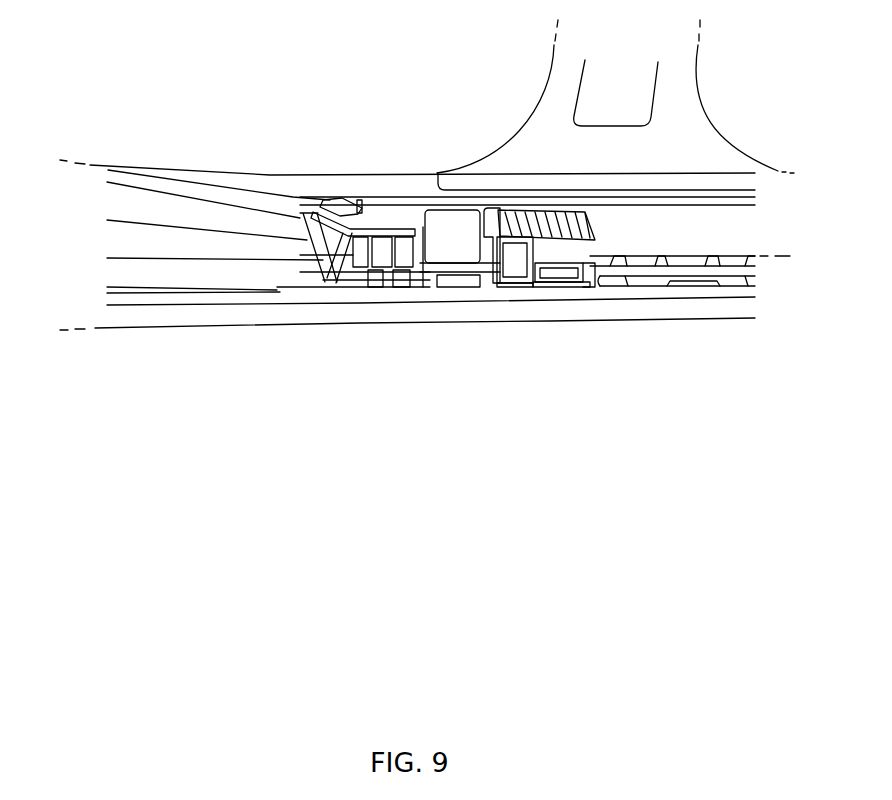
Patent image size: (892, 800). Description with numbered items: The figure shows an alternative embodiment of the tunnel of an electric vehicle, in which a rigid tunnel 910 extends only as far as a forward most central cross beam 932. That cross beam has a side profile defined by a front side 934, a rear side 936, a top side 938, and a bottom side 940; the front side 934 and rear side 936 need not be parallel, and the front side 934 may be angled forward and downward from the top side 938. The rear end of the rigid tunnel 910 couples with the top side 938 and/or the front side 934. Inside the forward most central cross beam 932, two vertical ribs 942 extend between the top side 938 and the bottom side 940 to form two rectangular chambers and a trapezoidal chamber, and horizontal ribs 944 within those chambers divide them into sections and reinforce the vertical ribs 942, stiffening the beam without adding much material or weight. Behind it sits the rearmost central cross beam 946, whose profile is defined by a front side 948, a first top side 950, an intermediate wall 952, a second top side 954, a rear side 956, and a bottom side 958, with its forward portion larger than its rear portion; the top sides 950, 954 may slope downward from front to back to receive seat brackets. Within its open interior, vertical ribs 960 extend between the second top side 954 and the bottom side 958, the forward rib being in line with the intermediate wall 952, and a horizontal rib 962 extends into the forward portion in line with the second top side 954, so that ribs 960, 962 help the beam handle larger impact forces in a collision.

The rigid tunnel 910 is at (198, 207).
The forward most central cross beam 932 is at (420, 287).
The front side 934 is at (323, 272).
The rear side 936 is at (421, 222).
The top side 938 is at (402, 207).
The bottom side 940 is at (347, 287).
The ribs 942 is at (397, 287).
The horizontal ribs 944 is at (375, 287).
The rearmost central cross beam 946 is at (582, 285).
The front side 948 is at (487, 287).
The first top side 950 is at (501, 240).
The intermediate wall 952 is at (540, 230).
The second top side 954 is at (570, 267).
The rear side 956 is at (590, 278).
The bottom side 958 is at (525, 287).
The ribs 960 is at (557, 287).
The horizontal rib 962 is at (508, 287).